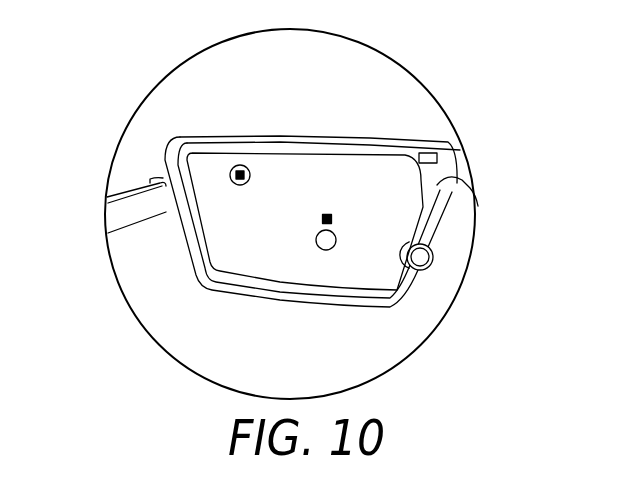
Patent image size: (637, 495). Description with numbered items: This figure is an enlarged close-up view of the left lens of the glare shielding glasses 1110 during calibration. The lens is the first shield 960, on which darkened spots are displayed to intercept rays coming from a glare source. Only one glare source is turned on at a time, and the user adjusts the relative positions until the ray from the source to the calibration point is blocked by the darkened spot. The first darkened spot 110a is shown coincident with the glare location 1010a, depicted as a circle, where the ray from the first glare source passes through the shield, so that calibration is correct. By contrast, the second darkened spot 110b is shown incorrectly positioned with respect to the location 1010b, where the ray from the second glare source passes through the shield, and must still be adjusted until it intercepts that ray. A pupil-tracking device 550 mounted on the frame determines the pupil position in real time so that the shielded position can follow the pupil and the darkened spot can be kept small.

The glare shielding glasses 1110 is at (433, 140).
The first shield 960 is at (238, 254).
The pupil-tracking device 550 is at (437, 158).
The glare location 1010a is at (230, 175).
The first darkened spot 110a is at (238, 166).
The second darkened spot 110b is at (329, 214).
The glare location 1010b is at (333, 247).